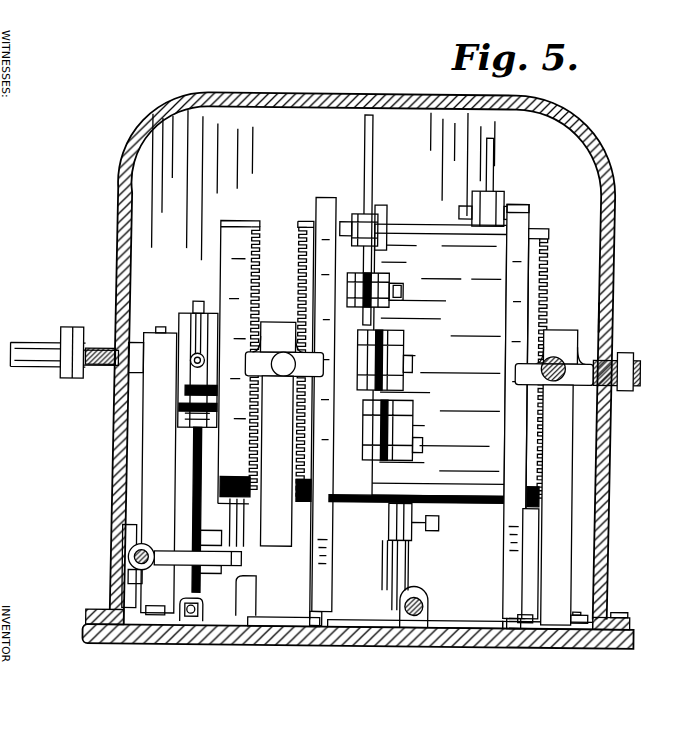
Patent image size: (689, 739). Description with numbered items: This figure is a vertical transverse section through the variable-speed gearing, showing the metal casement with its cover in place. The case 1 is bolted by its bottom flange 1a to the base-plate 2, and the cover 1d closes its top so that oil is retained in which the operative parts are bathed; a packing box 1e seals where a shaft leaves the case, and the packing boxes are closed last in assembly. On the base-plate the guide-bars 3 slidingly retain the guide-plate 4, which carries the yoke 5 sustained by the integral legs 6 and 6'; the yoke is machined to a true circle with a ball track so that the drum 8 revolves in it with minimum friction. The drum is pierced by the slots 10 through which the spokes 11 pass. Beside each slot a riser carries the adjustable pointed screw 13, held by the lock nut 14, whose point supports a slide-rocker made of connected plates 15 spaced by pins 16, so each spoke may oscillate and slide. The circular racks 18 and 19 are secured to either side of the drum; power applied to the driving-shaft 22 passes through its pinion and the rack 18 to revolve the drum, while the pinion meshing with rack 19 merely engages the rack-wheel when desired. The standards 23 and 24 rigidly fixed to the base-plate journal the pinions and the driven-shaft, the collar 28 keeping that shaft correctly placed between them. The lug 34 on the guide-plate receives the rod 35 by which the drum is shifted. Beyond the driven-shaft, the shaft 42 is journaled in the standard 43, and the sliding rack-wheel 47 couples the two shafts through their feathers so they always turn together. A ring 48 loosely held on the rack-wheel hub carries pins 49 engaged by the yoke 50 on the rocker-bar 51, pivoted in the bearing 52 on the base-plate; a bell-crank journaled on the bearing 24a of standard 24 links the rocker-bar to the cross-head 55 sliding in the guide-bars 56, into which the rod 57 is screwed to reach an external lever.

The case 1 is at (604, 472).
The bottom flange 1a is at (632, 622).
The cover 1d is at (611, 308).
The packing box 1e is at (75, 333).
The base-plate 2 is at (640, 644).
The guide-bar 3 is at (578, 618).
The guide-plate 4 is at (448, 620).
The yoke 5 is at (526, 209).
The leg 6 is at (302, 412).
The frame standard 6' is at (538, 416).
The drum 8 is at (418, 364).
The slot 10 is at (401, 412).
The spoke 11 is at (367, 143).
The screw 13 is at (401, 288).
The lock nut 14 is at (390, 295).
The plate 15 is at (492, 197).
The pin 16 is at (641, 377).
The circular rack 18 is at (545, 241).
The circular rack 19 is at (303, 224).
The driving-shaft 22 is at (565, 360).
The standard 23 is at (573, 532).
The standard 24 is at (283, 434).
The bearing 24a is at (251, 571).
The collar 28 is at (298, 345).
The lug 34 is at (432, 597).
The rod 35 is at (413, 616).
The shaft 42 is at (28, 347).
The standard 43 is at (153, 492).
The rack-wheel 47 is at (243, 222).
The ring 48 is at (197, 303).
The pin 49 is at (192, 364).
The yoke 50 is at (193, 418).
The rocker-bar 51 is at (202, 506).
The bearing 52 is at (206, 612).
The cross-head 55 is at (127, 567).
The guide-bar 56 is at (130, 530).
The rod 57 is at (118, 580).